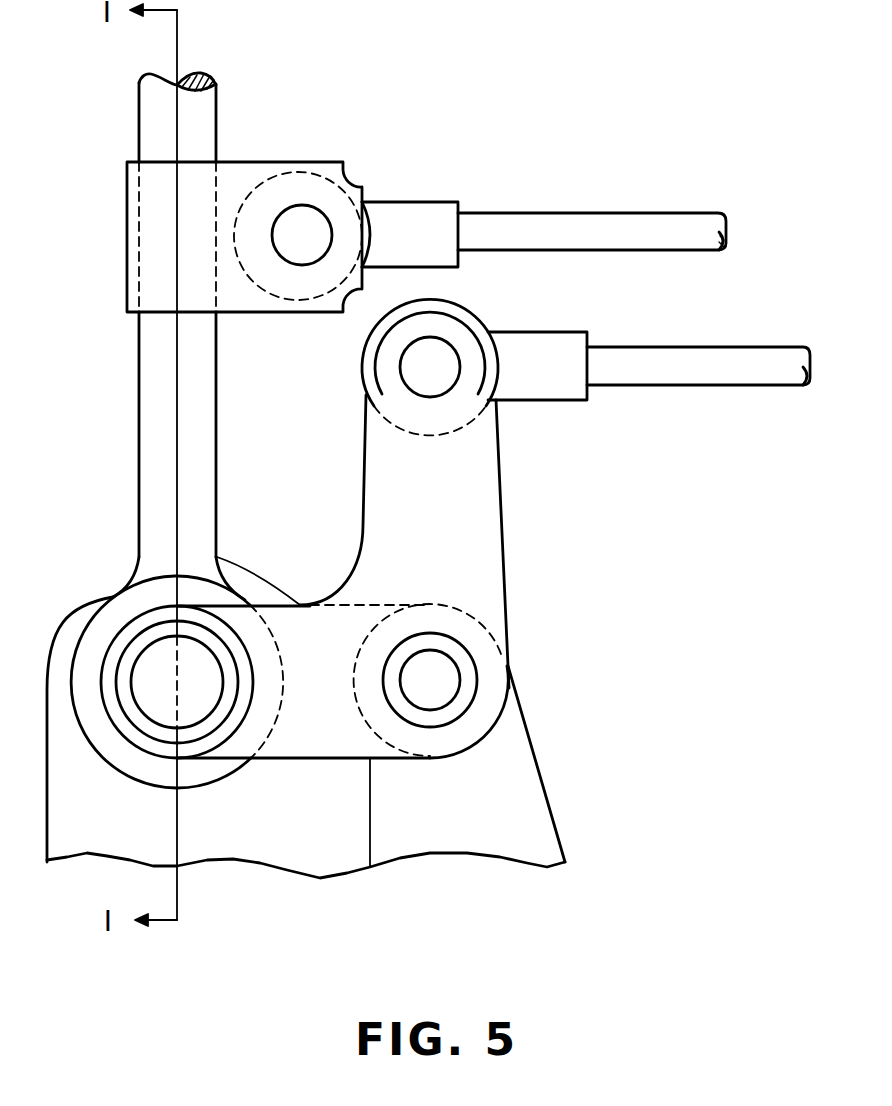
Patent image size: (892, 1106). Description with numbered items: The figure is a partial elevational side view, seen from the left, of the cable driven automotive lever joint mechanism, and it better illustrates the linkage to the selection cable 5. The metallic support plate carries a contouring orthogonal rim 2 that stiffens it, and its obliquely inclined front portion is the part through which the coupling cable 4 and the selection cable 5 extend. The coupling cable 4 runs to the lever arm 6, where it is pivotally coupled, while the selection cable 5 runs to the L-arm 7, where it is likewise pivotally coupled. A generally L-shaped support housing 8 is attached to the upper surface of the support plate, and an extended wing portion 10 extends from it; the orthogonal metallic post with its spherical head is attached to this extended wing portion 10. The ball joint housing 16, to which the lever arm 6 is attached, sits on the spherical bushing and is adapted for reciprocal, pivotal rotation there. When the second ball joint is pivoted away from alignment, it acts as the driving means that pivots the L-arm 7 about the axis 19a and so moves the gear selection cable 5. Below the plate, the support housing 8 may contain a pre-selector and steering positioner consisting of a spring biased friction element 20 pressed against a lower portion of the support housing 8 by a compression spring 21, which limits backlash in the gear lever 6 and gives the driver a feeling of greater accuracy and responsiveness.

The contouring orthogonal rim 2 is at (70, 613).
The coupling cable 4 is at (614, 221).
The selection cable 5 is at (722, 352).
The lever arm 6 is at (205, 117).
The L-arm 7 is at (487, 508).
The support housing 8 is at (535, 750).
The extended wing portion 10 is at (343, 162).
The ball joint housing 16 is at (113, 597).
The axis 19a is at (452, 676).
The spring biased friction element 20 is at (186, 715).
The compression spring 21 is at (228, 702).